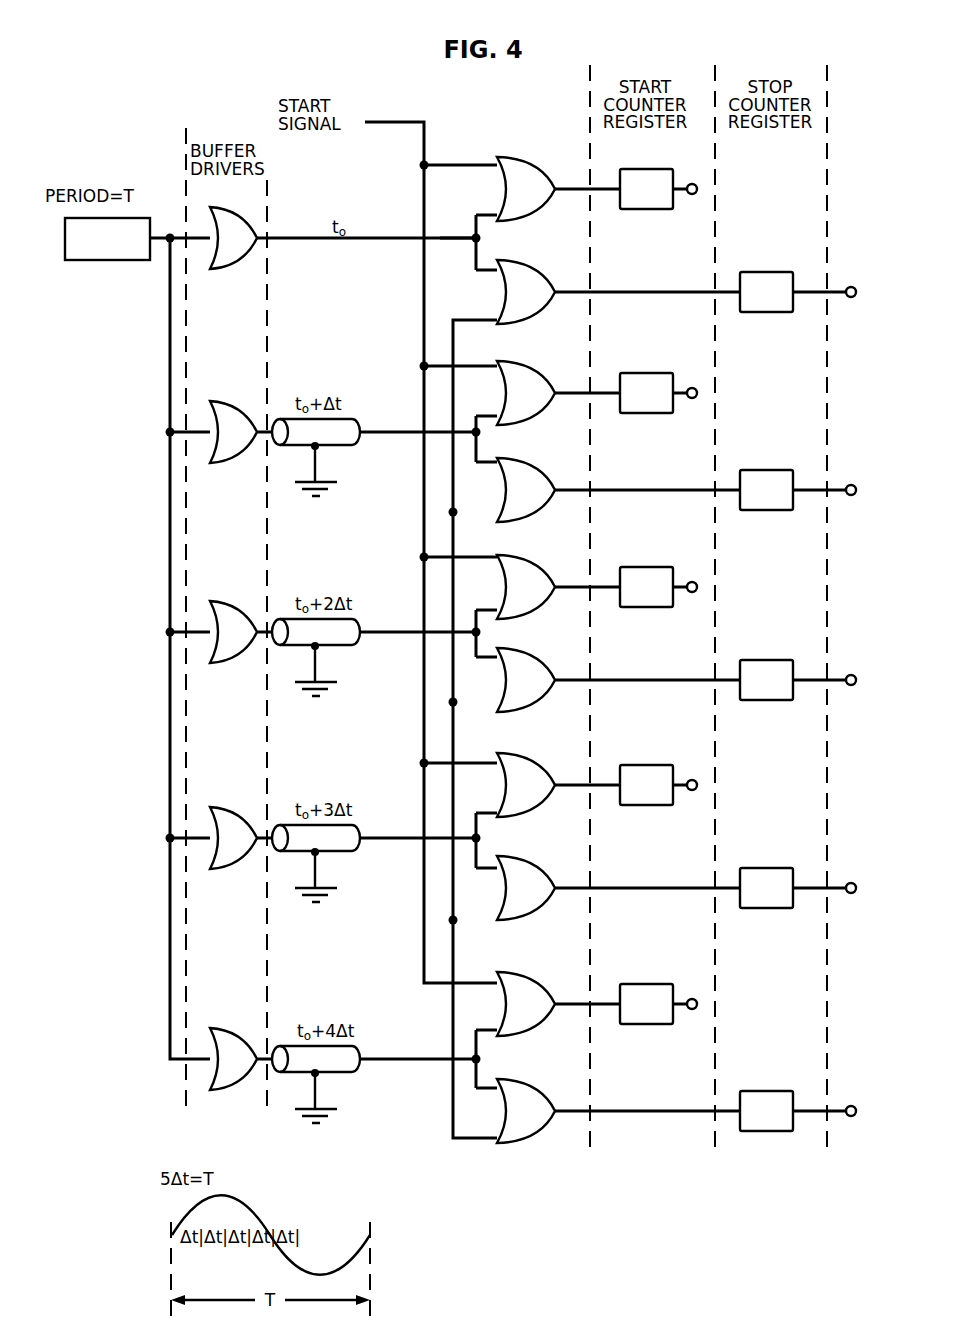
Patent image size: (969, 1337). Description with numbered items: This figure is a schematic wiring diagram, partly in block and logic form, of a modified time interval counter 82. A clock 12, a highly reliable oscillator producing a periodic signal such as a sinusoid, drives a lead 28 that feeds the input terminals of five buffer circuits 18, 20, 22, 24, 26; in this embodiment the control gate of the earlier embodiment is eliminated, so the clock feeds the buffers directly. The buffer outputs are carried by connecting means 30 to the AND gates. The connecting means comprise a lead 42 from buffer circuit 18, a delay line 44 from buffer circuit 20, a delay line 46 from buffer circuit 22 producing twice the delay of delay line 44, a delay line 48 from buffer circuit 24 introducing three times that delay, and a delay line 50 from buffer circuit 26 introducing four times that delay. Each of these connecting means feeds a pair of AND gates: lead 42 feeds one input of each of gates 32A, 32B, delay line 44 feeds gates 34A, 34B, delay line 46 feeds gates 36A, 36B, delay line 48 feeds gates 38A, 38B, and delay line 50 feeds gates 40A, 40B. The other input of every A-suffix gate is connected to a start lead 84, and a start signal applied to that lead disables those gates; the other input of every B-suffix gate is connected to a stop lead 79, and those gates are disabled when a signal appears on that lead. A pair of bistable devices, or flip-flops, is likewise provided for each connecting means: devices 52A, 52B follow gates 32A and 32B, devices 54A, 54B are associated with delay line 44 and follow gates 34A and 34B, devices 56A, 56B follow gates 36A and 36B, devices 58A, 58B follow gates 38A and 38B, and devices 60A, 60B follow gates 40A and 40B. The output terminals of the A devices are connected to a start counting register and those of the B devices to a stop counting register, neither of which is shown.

The clock 12 is at (112, 252).
The buffer circuit 18 is at (238, 242).
The buffer circuit 20 is at (232, 408).
The buffer circuit 22 is at (233, 608).
The buffer circuit 24 is at (233, 814).
The buffer circuit 26 is at (234, 1035).
The lead 28 is at (156, 234).
The connecting means 30 is at (377, 236).
The AND gate 32A is at (532, 180).
The AND gate 32B is at (532, 283).
The AND gate 34A is at (532, 383).
The AND gate 34B is at (532, 481).
The AND gate 36A is at (532, 577).
The AND gate 36B is at (532, 671).
The AND gate 38A is at (532, 775).
The AND gate 38B is at (532, 879).
The AND gate 40A is at (532, 994).
The AND gate 40B is at (532, 1102).
The lead 42 is at (366, 261).
The delay line 44 is at (342, 442).
The delay line 46 is at (348, 641).
The delay line 48 is at (348, 847).
The delay line 50 is at (336, 1068).
The bistable device 52A is at (640, 177).
The bistable device 52B is at (772, 277).
The bistable device 54A is at (640, 381).
The bistable device 54B is at (772, 475).
The bistable device 56A is at (640, 575).
The bistable device 56B is at (772, 665).
The bistable device 58A is at (640, 773).
The bistable device 58B is at (772, 873).
The bistable device 60A is at (640, 992).
The bistable device 60B is at (772, 1096).
The stop lead 79 is at (453, 1084).
The time interval counter 82 is at (150, 1050).
The start lead 84 is at (391, 124).